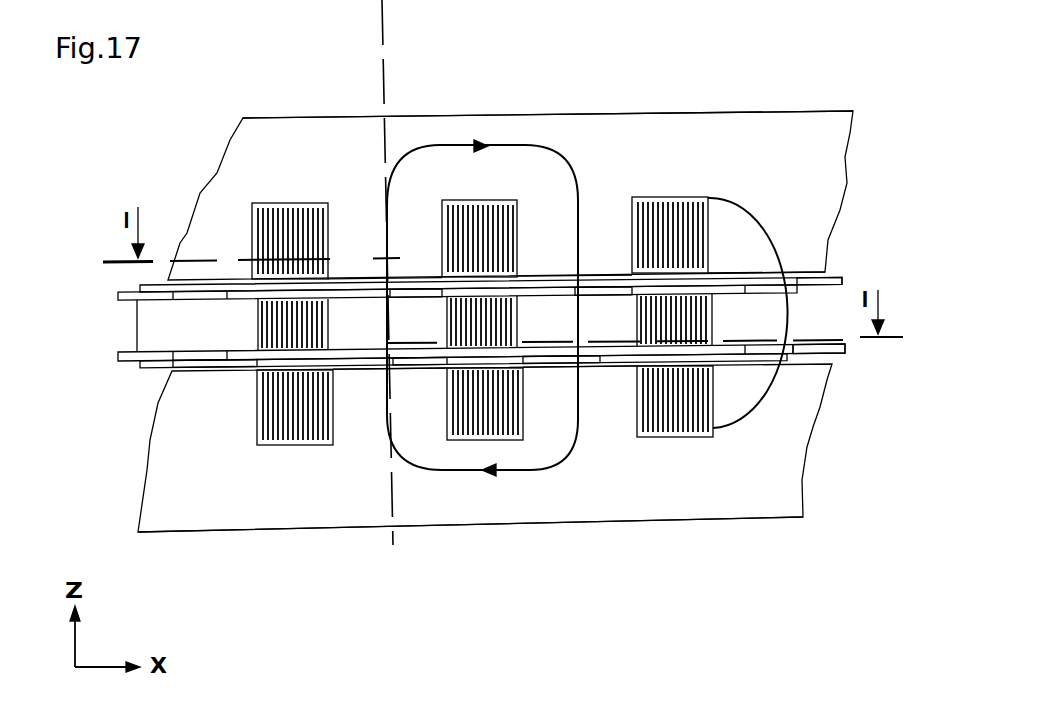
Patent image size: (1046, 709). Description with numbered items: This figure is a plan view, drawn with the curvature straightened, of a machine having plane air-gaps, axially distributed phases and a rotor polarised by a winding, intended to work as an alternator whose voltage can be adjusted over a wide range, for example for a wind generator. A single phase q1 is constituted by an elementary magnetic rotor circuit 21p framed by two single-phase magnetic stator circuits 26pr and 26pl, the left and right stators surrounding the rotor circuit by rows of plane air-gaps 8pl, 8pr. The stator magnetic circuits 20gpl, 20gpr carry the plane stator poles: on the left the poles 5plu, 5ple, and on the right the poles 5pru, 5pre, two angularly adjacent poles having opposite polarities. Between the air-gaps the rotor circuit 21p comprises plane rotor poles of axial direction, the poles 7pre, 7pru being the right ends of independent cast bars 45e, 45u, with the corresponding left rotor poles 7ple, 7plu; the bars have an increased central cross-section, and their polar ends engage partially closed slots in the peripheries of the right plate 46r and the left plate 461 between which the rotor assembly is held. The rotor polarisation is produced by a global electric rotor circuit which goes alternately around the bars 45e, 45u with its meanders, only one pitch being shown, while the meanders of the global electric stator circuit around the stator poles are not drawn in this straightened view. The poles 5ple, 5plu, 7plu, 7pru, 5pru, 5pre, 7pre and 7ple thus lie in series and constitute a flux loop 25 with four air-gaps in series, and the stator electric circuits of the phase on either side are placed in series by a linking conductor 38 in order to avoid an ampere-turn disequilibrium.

The phase q1 is at (141, 148).
The single phase magnetic stator circuit 26pr is at (158, 178).
The single phase magnetic stator circuit 26pl is at (138, 438).
The stator magnetic circuit 20gpr is at (268, 133).
The stator magnetic circuit 20gpl is at (177, 465).
The plane air-gap 8pr is at (126, 280).
The plane air-gap 8pl is at (120, 372).
The elementary magnetic rotor circuit 21p is at (126, 330).
The cast bar 45u is at (225, 317).
The cast bar 45e is at (427, 313).
The stator pole 5pre is at (365, 270).
The stator pole 5pru is at (543, 260).
The rotor pole 7pre is at (405, 267).
The rotor pole 7pru is at (618, 313).
The linking conductor 38 is at (735, 200).
The plate 46r is at (837, 282).
The plate 461 is at (837, 348).
The rotor pole 7plu is at (233, 368).
The stator pole 5ple is at (360, 380).
The rotor pole 7ple is at (415, 363).
The flux loop 25 is at (508, 473).
The stator pole 5plu is at (600, 377).